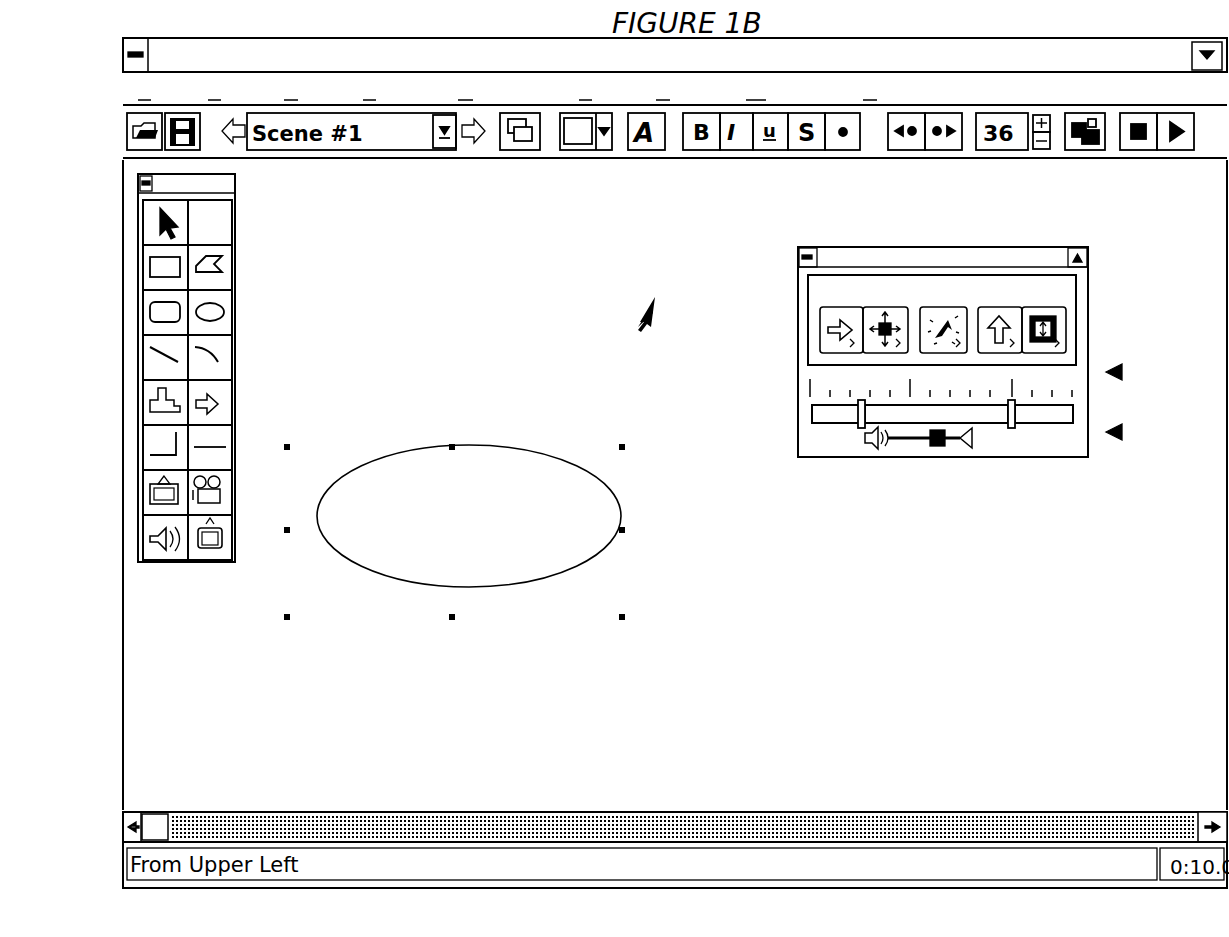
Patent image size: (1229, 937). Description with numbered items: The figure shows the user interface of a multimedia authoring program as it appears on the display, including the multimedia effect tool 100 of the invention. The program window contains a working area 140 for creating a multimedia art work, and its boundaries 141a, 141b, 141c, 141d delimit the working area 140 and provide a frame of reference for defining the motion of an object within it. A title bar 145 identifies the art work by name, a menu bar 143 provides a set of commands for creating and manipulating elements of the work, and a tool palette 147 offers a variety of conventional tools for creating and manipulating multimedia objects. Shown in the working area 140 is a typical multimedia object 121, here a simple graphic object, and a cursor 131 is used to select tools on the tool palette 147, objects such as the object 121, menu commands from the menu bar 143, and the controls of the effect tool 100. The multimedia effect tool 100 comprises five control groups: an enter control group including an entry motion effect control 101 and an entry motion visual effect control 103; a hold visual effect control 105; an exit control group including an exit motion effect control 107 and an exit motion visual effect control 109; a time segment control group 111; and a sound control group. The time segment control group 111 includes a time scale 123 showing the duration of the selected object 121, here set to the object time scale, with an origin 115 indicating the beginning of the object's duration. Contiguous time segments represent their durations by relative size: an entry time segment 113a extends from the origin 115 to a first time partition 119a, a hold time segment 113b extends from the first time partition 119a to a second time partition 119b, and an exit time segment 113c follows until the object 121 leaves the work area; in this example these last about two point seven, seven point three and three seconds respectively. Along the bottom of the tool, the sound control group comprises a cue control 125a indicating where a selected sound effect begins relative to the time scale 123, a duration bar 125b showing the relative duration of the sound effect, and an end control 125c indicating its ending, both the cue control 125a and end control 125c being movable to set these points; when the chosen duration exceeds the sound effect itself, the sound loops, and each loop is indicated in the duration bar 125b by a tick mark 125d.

The multimedia effect tool 100 is at (797, 350).
The entry motion effect control 101 is at (835, 308).
The entry motion visual effect control 103 is at (893, 308).
The hold visual effect control 105 is at (950, 308).
The exit motion effect control 107 is at (1000, 308).
The exit motion visual effect control 109 is at (1050, 308).
The time segment control group 111 is at (1122, 372).
The entry time segment 113a is at (835, 417).
The hold time segment 113b is at (975, 417).
The exit time segment 113c is at (1046, 417).
The origin 115 is at (810, 384).
The first time partition 119a is at (858, 425).
The second time partition 119b is at (1011, 428).
The multimedia object 121 is at (454, 532).
The time scale 123 is at (1058, 398).
The cue control 125a is at (884, 445).
The duration bar 125b is at (910, 440).
The end control 125c is at (962, 447).
The tick mark 125d is at (937, 446).
The cursor 131 is at (632, 312).
The working area 140 is at (455, 440).
The window boundary 141a is at (123, 665).
The window boundary 141b is at (667, 812).
The window boundary 141c is at (1227, 660).
The window boundary 141d is at (1200, 160).
The menu bar 143 is at (675, 91).
The title bar 145 is at (675, 55).
The tool palette 147 is at (235, 238).